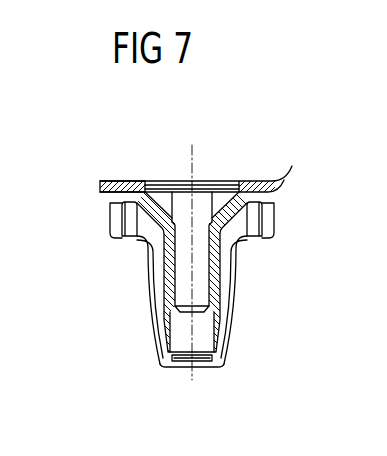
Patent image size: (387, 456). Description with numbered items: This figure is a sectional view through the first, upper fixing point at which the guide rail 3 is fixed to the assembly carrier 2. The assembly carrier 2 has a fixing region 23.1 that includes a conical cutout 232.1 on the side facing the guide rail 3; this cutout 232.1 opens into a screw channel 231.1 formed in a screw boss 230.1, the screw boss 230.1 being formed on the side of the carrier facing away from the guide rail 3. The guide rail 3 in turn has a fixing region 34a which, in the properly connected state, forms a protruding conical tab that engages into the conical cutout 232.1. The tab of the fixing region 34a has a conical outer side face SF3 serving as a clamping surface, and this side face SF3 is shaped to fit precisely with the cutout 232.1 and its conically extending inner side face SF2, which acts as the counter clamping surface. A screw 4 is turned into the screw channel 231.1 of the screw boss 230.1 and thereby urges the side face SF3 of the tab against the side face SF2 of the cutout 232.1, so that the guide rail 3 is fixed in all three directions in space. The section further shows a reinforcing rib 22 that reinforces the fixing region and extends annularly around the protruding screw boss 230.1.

The assembly carrier 2 is at (100, 213).
The guide rail 3 is at (281, 167).
The screw 4 is at (208, 183).
The reinforcing rib 22 is at (122, 236).
The fixing region 23.1 is at (246, 290).
The fixing region 34a is at (149, 186).
The screw boss 230.1 is at (218, 353).
The screw channel 231.1 is at (186, 324).
The conical cutout 232.1 is at (233, 213).
The side face SF2 is at (155, 205).
The side face SF3 is at (175, 217).